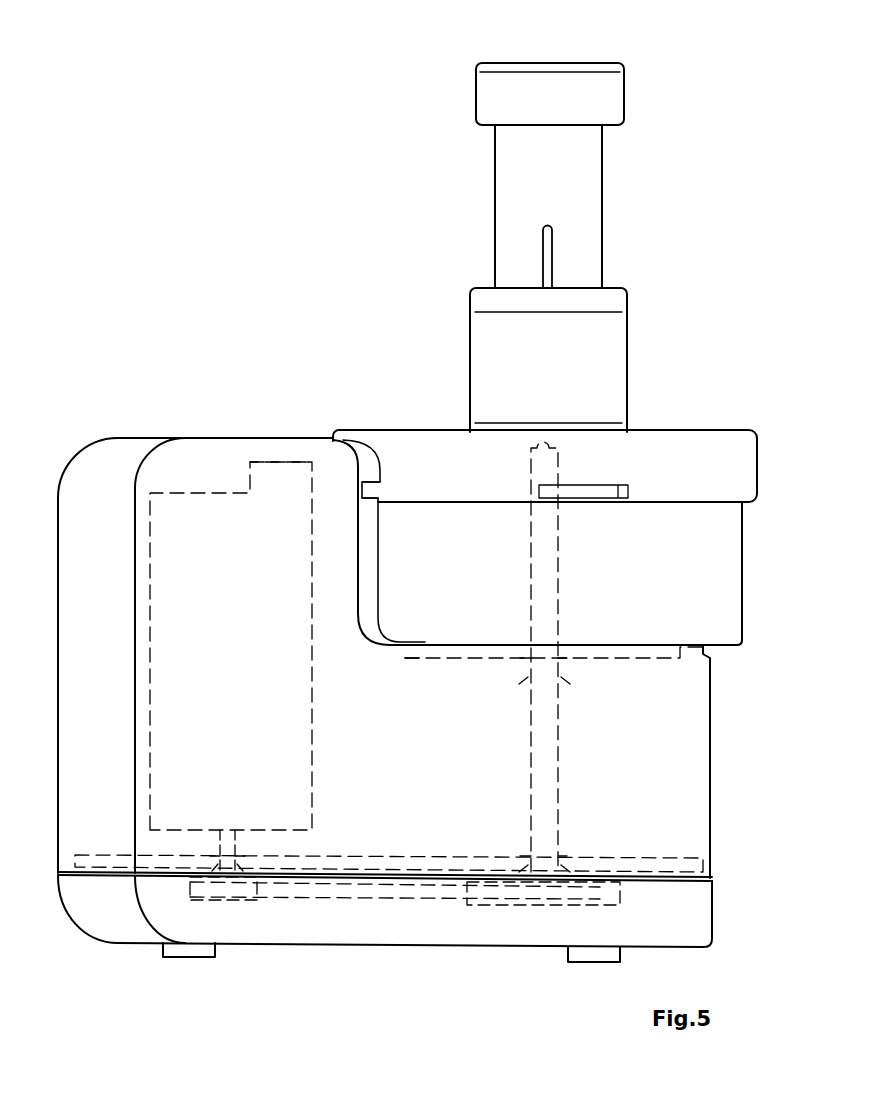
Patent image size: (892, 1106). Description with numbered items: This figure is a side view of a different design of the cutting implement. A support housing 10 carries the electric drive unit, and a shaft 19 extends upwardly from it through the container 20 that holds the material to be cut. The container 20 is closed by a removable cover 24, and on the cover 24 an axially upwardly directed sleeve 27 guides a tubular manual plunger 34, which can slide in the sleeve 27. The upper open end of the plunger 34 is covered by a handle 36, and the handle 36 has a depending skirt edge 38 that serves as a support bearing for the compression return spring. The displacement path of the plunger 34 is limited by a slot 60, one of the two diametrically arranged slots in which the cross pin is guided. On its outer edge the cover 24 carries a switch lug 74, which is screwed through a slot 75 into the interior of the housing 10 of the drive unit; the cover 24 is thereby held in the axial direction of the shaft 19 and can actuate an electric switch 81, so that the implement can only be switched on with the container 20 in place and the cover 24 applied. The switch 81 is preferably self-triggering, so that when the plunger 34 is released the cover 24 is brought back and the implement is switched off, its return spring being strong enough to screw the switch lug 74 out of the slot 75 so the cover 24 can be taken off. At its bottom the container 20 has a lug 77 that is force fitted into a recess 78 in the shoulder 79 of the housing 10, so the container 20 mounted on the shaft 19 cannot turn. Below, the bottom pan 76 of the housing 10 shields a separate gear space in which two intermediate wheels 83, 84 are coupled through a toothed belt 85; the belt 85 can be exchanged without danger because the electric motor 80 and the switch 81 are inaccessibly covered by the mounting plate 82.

The support housing 10 is at (228, 440).
The shaft 19 is at (560, 552).
The container 20 is at (471, 515).
The cover 24 is at (412, 442).
The sleeve 27 is at (477, 338).
The plunger 34 is at (503, 183).
The handle 36 is at (538, 66).
The skirt edge 38 is at (485, 95).
The slot 60 is at (543, 247).
The switch lug 74 is at (598, 490).
The slot 75 is at (376, 486).
The bottom pan 76 is at (695, 907).
The lug 77 is at (618, 655).
The recess 78 is at (405, 655).
The shoulder 79 is at (700, 694).
The electric motor 80 is at (183, 493).
The electric switch 81 is at (286, 462).
The mounting plate 82 is at (372, 855).
The intermediate wheel 83 is at (225, 900).
The intermediate wheel 84 is at (508, 905).
The toothed belt 85 is at (372, 870).